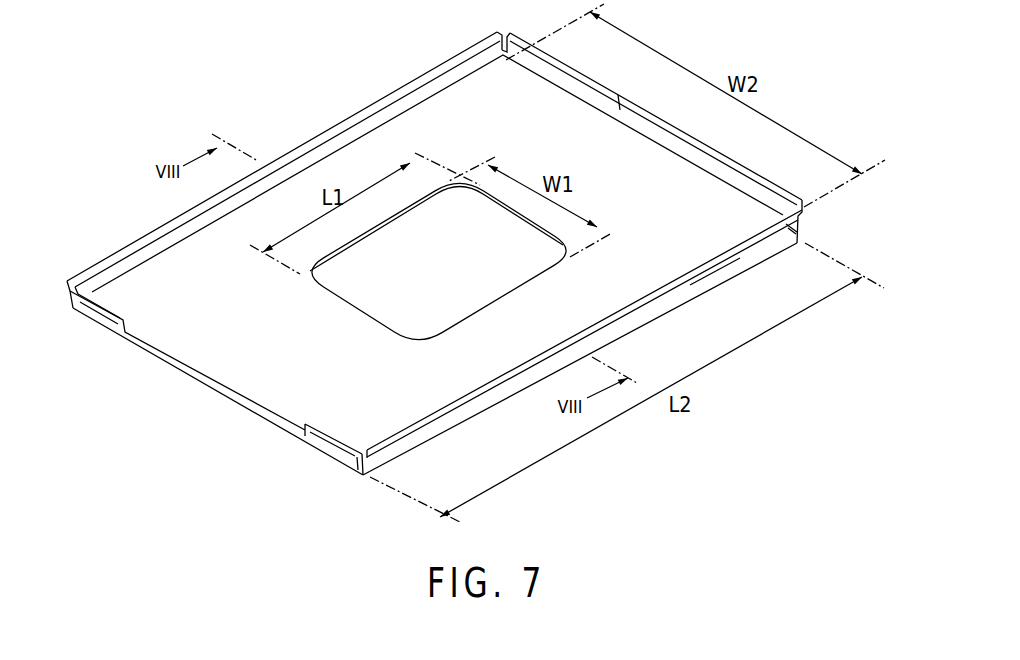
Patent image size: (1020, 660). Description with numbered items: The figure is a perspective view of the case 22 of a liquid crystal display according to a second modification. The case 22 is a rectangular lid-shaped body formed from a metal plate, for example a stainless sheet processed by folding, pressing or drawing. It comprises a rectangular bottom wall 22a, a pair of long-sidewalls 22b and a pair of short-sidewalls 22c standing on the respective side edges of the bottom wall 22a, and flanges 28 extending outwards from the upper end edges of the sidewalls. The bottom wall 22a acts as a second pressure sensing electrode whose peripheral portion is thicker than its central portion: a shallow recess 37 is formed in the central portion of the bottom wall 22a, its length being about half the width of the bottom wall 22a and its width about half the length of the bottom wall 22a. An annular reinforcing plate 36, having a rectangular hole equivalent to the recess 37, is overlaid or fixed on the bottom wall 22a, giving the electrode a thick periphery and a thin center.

The case 22 is at (447, 275).
The bottom wall 22a is at (653, 162).
The long-sidewall 22b is at (132, 264).
The short-sidewall 22c is at (610, 116).
The flange 28 is at (391, 98).
The reinforcing plate 36 is at (713, 269).
The recess 37 is at (344, 305).